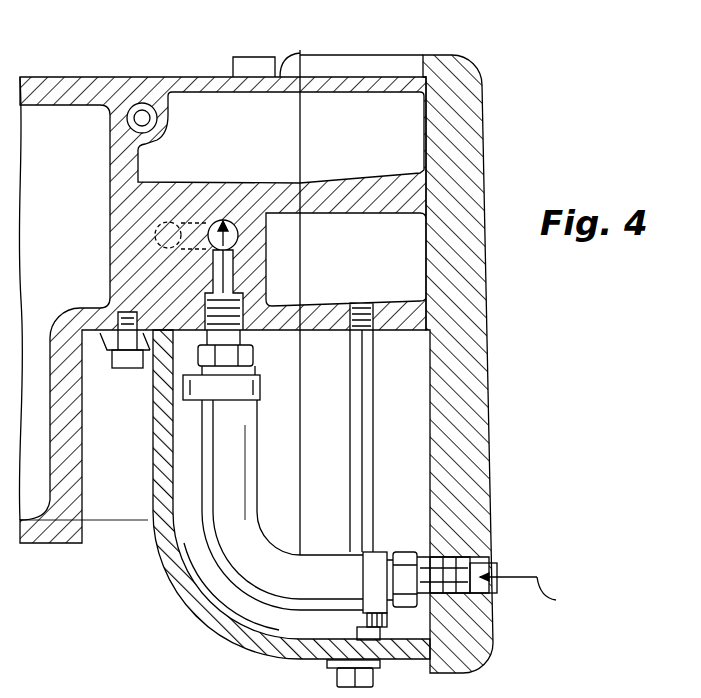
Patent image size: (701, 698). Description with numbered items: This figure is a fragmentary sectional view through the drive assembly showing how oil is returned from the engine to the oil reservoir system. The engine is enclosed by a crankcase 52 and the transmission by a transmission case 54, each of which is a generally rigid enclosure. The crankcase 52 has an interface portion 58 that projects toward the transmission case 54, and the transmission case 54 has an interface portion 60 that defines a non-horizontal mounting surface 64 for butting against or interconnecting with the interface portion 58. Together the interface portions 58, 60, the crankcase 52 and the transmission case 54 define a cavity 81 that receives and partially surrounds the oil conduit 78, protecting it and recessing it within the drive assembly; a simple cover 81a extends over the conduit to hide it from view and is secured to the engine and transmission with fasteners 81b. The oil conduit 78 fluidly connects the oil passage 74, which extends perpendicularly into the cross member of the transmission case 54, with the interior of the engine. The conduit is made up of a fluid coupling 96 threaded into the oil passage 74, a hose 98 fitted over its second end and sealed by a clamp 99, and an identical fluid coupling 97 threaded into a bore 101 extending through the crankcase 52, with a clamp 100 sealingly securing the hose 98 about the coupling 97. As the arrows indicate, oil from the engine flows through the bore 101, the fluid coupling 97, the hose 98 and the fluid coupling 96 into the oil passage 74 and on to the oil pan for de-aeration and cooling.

The crankcase 52 is at (458, 78).
The transmission case 54 is at (67, 77).
The interface portion 58 is at (374, 77).
The interface portion 60 is at (220, 82).
The non-horizontal mounting surface 64 is at (283, 77).
The oil passage 74 is at (208, 262).
The oil conduit 78 is at (212, 622).
The cavity 81 is at (107, 488).
The cover 81a is at (227, 643).
The fasteners 81b is at (113, 368).
The fluid coupling 96 is at (255, 352).
The fluid coupling 97 is at (403, 552).
The hose 98 is at (225, 578).
The clamp 99 is at (183, 393).
The clamp 100 is at (355, 620).
The bore 101 is at (497, 572).